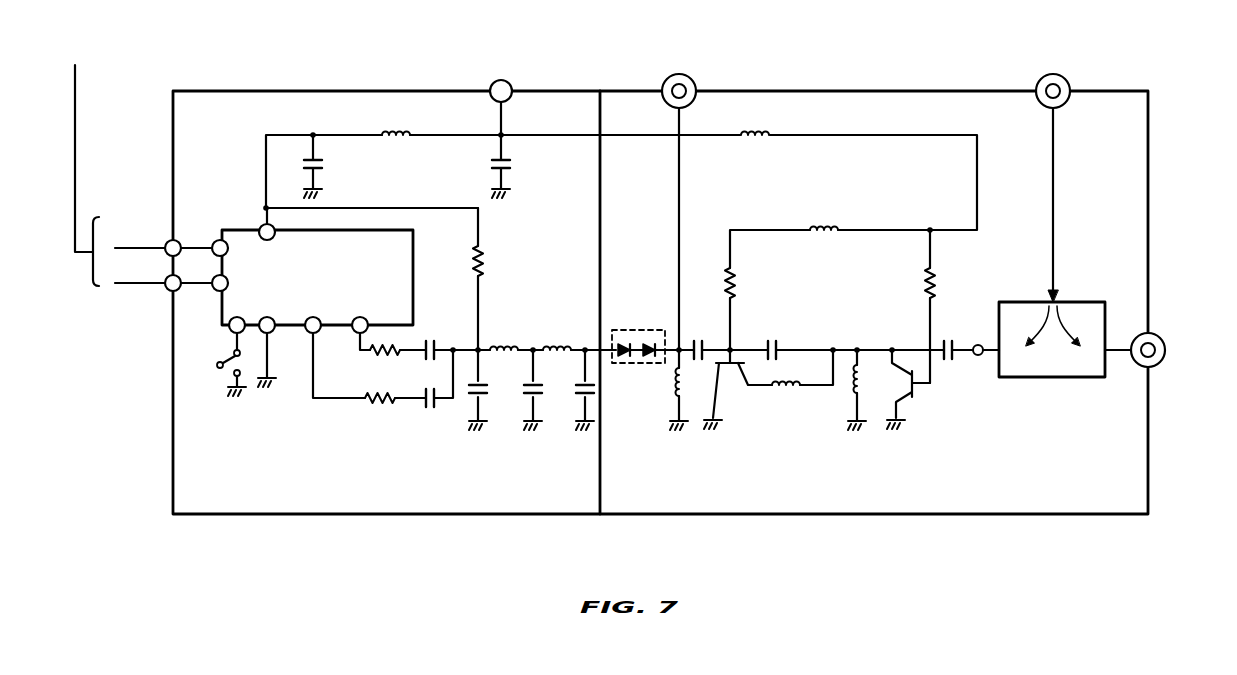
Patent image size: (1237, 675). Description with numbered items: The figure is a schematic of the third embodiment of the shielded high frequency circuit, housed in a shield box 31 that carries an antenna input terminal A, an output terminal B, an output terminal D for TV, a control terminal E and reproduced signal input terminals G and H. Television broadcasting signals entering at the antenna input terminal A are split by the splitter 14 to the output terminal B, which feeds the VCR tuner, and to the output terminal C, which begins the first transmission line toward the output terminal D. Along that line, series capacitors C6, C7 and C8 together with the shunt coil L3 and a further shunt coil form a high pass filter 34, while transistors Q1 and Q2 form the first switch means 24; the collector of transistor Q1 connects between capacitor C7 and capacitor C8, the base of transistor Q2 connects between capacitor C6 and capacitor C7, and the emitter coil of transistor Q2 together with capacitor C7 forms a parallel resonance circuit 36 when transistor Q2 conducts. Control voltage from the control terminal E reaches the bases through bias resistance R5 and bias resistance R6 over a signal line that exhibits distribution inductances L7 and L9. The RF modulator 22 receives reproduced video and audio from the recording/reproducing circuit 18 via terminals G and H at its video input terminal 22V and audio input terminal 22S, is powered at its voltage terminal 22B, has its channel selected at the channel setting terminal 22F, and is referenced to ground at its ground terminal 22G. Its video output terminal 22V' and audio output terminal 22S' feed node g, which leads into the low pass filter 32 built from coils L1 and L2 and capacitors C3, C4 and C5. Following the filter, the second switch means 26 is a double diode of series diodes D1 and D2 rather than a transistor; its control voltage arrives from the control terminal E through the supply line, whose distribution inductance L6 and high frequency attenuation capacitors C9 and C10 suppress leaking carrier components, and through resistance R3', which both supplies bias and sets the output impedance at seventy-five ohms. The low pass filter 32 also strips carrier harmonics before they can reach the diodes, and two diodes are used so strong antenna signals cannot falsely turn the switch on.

The shield box 31 is at (1148, 190).
The recording/reproducing circuit 18 is at (185, 154).
The RF modulator 22 is at (395, 252).
The voltage terminal 22B is at (262, 226).
The video input terminal 22V is at (205, 231).
The audio input terminal 22S is at (203, 300).
The channel setting terminal 22F is at (247, 336).
The ground terminal of RF modulator IC 22G is at (267, 352).
The audio output terminal 22S' is at (358, 367).
The video output terminal 22V' is at (404, 350).
The low pass filter 32 is at (535, 384).
The second switch means 26 is at (650, 379).
The first switch means 24 is at (820, 401).
The parallel resonance circuit 36 is at (774, 387).
The high pass filter 34 is at (858, 346).
The splitter 14 is at (1070, 302).
The reproduced signal input terminal G is at (170, 241).
The reproduced signal input terminal H is at (167, 291).
The control terminal E is at (488, 88).
The output terminal for TV D is at (664, 88).
The antenna input terminal A is at (1040, 80).
The output terminal B is at (1163, 340).
The output terminal C is at (980, 356).
The coil L1 is at (516, 334).
The coil L2 is at (579, 334).
The coil L3 is at (676, 376).
The distribution inductance L6 is at (382, 171).
The distribution inductance L7 is at (977, 180).
The distribution inductance L9 is at (831, 237).
The capacitor C3 is at (471, 398).
The capacitor C4 is at (522, 388).
The capacitor C5 is at (586, 345).
The capacitor C6 is at (708, 336).
The capacitor C7 is at (779, 345).
The capacitor C8 is at (953, 345).
The capacitor C9 is at (331, 146).
The capacitor C10 is at (525, 165).
The resistance R3' is at (503, 294).
The bias resistance R5 is at (737, 284).
The bias resistance R6 is at (936, 285).
The diode D1 is at (614, 330).
The diode D2 is at (648, 330).
The transistor Q1 is at (914, 390).
The transistor Q2 is at (735, 370).